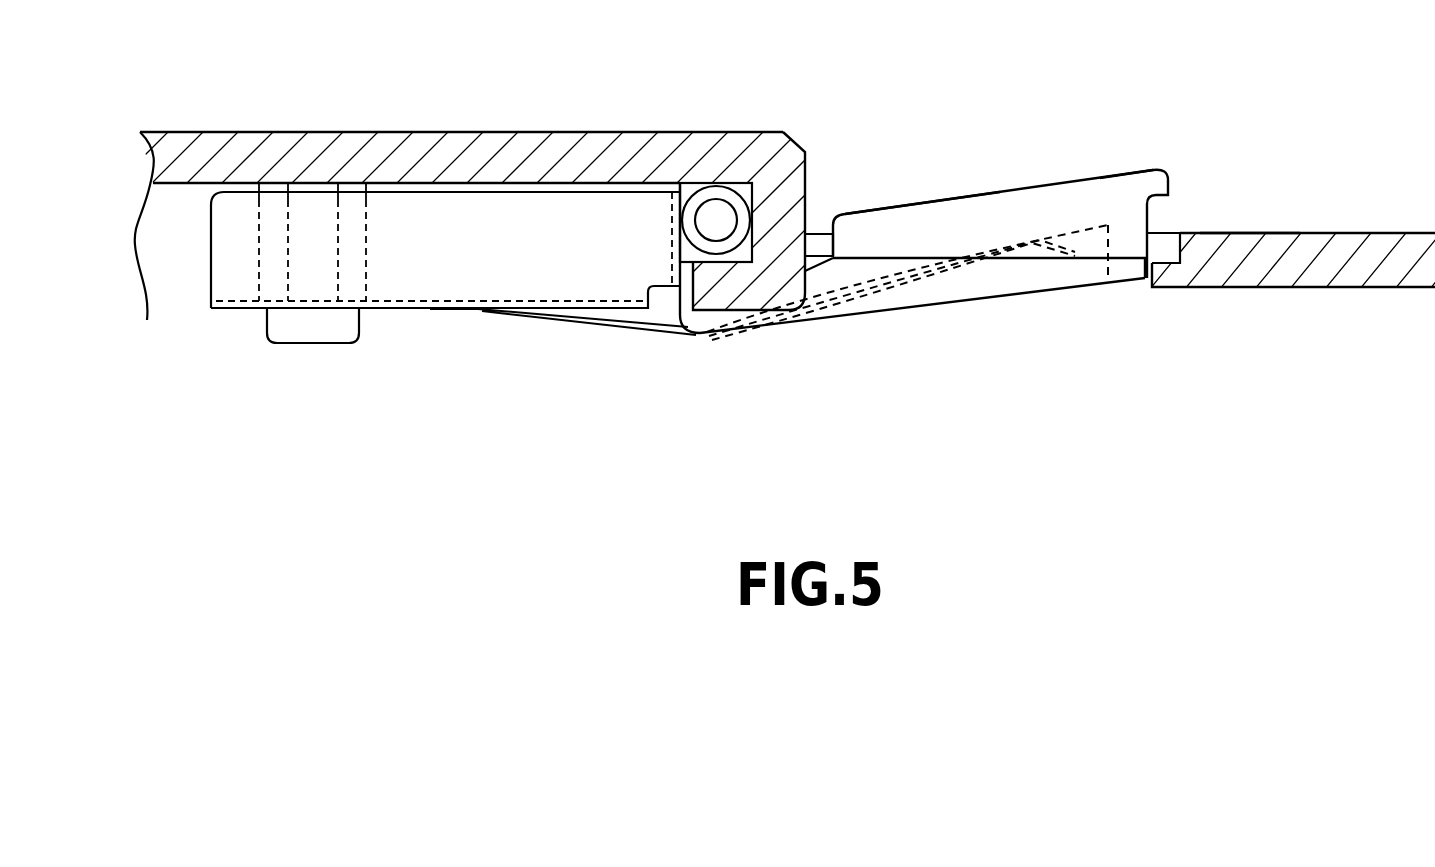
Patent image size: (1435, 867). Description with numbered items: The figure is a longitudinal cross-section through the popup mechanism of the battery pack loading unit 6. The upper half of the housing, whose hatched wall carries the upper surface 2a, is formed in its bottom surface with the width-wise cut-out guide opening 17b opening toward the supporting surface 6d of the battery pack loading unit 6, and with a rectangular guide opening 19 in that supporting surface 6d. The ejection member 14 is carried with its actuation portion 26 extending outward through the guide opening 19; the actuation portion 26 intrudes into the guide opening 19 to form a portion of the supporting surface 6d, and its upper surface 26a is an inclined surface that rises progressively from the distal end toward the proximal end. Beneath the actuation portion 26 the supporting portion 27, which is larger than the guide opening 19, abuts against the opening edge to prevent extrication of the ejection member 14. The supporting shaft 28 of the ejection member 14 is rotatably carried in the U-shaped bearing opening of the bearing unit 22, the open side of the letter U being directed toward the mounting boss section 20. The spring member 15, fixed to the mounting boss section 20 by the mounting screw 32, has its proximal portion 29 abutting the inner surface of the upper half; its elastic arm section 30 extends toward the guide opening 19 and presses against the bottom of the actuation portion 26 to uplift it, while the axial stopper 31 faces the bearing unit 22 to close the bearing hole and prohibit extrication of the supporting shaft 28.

The upper surface 2a is at (472, 131).
The battery pack loading unit 6 is at (1294, 127).
The supporting surface 6d is at (1335, 232).
The ejection member 14 is at (1110, 155).
The spring member 15 is at (430, 328).
The cut-out guide opening 17b is at (820, 238).
The guide opening 19 is at (1165, 242).
The mounting boss section 20 is at (258, 248).
The bearing unit 22 is at (778, 163).
The actuation portion 26 is at (1057, 205).
The upper surface 26a is at (992, 193).
The supporting portion 27 is at (700, 325).
The supporting shaft 28 is at (715, 220).
The proximal portion 29 is at (545, 318).
The elastic arm section 30 is at (876, 292).
The axial stopper 31 is at (678, 228).
The mounting screw 32 is at (293, 325).